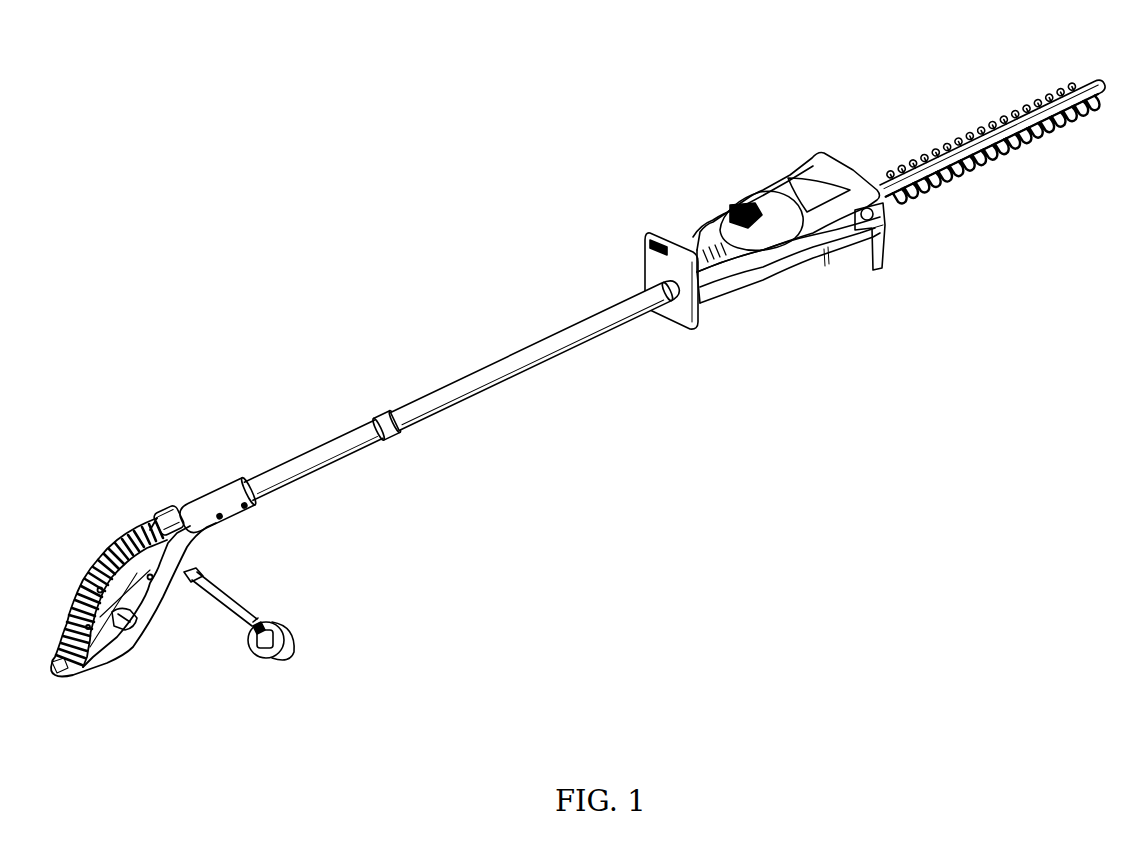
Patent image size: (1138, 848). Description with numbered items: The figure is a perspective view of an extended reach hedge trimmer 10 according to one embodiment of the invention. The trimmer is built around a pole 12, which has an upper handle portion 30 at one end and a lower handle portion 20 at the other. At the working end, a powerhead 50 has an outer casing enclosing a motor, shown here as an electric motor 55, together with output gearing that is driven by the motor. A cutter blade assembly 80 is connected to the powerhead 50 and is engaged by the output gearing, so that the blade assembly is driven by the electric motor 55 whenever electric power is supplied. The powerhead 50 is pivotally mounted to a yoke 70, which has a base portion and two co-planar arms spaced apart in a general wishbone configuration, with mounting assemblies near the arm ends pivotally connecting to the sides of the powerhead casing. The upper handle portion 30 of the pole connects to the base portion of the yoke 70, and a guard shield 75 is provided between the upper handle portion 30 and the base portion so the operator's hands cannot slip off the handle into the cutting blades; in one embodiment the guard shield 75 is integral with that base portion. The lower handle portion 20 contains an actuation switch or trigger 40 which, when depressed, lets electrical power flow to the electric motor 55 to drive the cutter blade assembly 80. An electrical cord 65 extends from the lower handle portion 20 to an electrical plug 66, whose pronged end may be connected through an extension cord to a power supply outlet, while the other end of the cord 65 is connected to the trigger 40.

The extended reach hedge trimmer 10 is at (432, 218).
The pole 12 is at (443, 408).
The lower handle portion 20 is at (84, 549).
The upper handle portion 30 is at (600, 307).
The trigger 40 is at (140, 613).
The powerhead 50 is at (832, 152).
The electric motor 55 is at (720, 217).
The electrical cord 65 is at (220, 592).
The electrical plug 66 is at (290, 642).
The yoke 70 is at (777, 278).
The guard shield 75 is at (643, 272).
The cutter blade assembly 80 is at (990, 168).